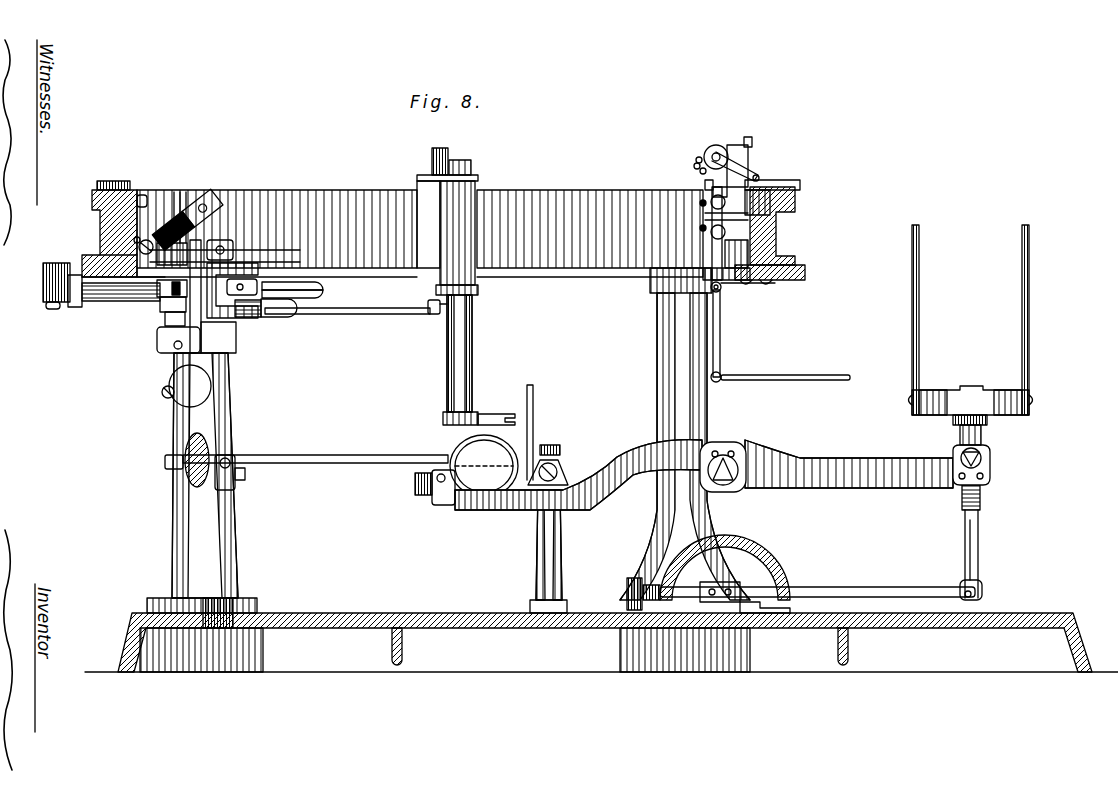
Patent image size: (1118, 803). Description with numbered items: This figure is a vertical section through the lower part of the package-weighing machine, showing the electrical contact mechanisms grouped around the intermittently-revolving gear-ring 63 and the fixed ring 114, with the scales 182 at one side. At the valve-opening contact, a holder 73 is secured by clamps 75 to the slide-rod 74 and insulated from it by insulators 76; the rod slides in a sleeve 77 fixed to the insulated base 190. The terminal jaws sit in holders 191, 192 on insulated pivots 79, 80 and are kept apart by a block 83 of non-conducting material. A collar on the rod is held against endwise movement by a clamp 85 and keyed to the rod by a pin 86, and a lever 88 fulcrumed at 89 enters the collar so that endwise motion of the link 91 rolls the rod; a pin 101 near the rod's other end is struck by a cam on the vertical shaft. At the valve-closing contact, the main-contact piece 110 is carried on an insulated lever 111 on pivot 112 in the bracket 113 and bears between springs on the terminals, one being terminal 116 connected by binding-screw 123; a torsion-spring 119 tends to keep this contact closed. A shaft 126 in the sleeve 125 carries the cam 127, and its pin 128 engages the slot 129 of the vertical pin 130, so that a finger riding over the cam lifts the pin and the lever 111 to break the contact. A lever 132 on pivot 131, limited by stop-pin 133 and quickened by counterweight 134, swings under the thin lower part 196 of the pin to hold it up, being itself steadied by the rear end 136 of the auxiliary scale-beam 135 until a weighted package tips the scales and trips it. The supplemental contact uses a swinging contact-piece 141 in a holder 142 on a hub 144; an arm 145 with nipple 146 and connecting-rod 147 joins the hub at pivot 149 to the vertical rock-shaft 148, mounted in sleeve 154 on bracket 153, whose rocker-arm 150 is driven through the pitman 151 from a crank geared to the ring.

The gear-ring 63 is at (100, 223).
The holder 73 is at (703, 168).
The slide-rod 74 is at (720, 160).
The clamps 75 is at (713, 187).
The insulators 76 is at (697, 165).
The sleeve 77 is at (722, 187).
The insulated pivot 79 is at (703, 203).
The insulated pivot 80 is at (703, 230).
The block of non-conducting material 83 is at (707, 197).
The clamp 85 is at (698, 157).
The pin 86 is at (737, 142).
The lever 88 is at (717, 250).
The fulcrum 89 is at (723, 287).
The link 91 is at (807, 378).
The pin 101 is at (748, 175).
The main-contact piece 110 is at (200, 193).
The insulated lever 111 is at (178, 198).
The pivot 112 is at (148, 240).
The bracket 113 is at (140, 192).
The fixed ring 114 is at (140, 282).
The terminal 116 is at (233, 272).
The torsion-spring 119 is at (102, 243).
The binding-screw 123 is at (230, 250).
The sleeve 125 is at (97, 297).
The shaft 126 is at (60, 303).
The cam 127 is at (48, 263).
The pin 128 is at (160, 307).
The slot 129 is at (177, 320).
The pin 130 is at (188, 247).
The pivot 131 is at (163, 392).
The lever 132 is at (172, 368).
The stop-pin 133 is at (205, 342).
The counterweight 134 is at (210, 385).
The auxiliary scale-beam 135 is at (327, 458).
The rear end of auxiliary scale-beam 136 is at (177, 462).
The swinging contact-piece 141 is at (324, 287).
The holder 142 is at (324, 296).
The hub 144 is at (282, 258).
The arm 145 is at (253, 318).
The nipple 146 is at (282, 320).
The connecting-rod 147 is at (353, 312).
The rock-shaft 148 is at (447, 370).
The pivot 149 is at (432, 305).
The rocker-arm 150 is at (472, 167).
The pitman 151 is at (455, 157).
The bracket 153 is at (432, 197).
The sleeve 154 is at (478, 285).
The scales 182 is at (943, 393).
The insulated base 190 is at (748, 157).
The holder 191 is at (717, 210).
The holder 192 is at (707, 227).
The thin lower part of pin 196 is at (173, 327).